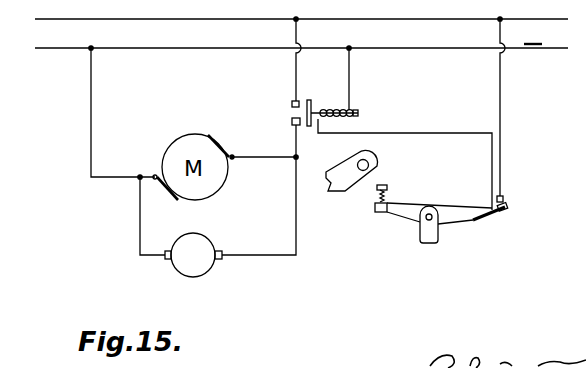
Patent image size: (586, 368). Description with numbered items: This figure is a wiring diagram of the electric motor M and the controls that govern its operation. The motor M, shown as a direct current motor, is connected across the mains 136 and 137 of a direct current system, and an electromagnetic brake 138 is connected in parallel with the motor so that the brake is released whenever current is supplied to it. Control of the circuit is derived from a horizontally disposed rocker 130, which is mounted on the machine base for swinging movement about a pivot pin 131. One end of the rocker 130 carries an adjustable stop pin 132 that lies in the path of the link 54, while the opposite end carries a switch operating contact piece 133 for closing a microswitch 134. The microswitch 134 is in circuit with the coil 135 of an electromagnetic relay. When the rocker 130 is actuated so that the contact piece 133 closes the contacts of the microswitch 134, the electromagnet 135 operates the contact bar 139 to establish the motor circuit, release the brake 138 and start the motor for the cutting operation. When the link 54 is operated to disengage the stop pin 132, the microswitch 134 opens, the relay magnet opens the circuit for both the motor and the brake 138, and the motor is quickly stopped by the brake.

The main 136 is at (204, 4).
The main 137 is at (156, 49).
The electromagnetic brake 138 is at (200, 265).
The contact bar 139 is at (307, 100).
The coil 135 is at (349, 110).
The microswitch 134 is at (504, 200).
The link 54 is at (348, 180).
The adjustable stop pin 132 is at (388, 188).
The rocker 130 is at (403, 208).
The pivot pin 131 is at (431, 215).
The switch operating contact piece 133 is at (492, 210).